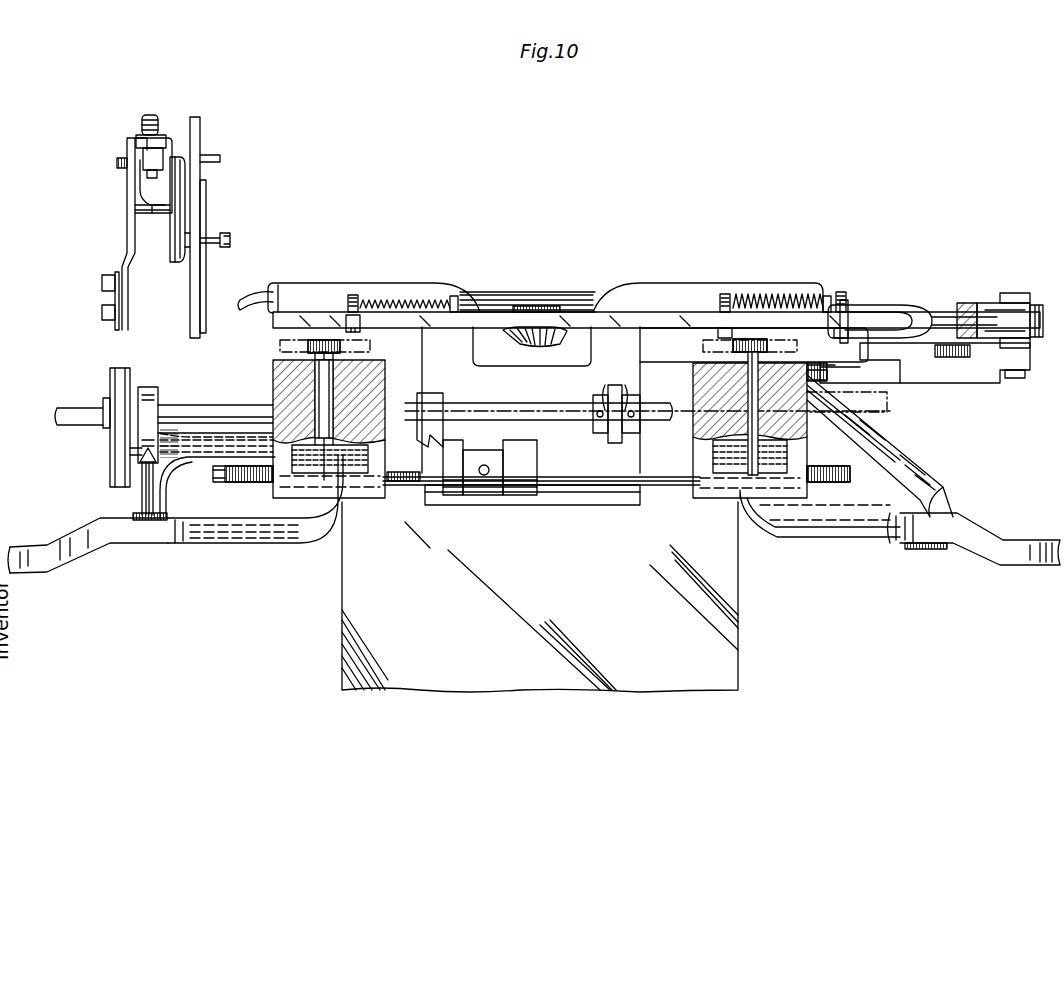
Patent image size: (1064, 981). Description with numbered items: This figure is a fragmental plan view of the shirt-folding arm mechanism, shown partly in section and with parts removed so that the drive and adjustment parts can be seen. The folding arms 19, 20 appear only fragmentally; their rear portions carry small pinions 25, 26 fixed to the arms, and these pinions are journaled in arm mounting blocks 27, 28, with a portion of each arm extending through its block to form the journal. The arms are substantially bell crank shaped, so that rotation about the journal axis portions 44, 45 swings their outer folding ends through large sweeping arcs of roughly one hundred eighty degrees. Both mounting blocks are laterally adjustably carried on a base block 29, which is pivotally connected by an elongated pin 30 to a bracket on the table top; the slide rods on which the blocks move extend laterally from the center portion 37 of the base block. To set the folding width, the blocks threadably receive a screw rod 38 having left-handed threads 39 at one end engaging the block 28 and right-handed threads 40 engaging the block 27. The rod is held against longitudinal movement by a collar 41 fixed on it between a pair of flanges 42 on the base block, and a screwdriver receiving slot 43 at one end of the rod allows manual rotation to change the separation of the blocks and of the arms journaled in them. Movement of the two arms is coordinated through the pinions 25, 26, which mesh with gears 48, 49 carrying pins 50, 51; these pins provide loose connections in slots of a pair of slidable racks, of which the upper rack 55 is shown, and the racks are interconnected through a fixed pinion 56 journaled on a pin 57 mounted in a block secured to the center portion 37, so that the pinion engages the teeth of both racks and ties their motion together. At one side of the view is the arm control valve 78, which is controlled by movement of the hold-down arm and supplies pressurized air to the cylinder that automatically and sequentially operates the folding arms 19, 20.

The folding arm 19 is at (72, 558).
The folding arm 20 is at (1003, 563).
The pinion 25 is at (300, 343).
The pinion 26 is at (753, 340).
The arm mounting block 27 is at (376, 370).
The arm mounting block 28 is at (695, 378).
The base block 29 is at (295, 295).
The elongated pin 30 is at (466, 294).
The center portion of base block 37 is at (572, 396).
The screw rod 38 is at (636, 495).
The left-handed threads 39 is at (825, 478).
The right-handed threads 40 is at (400, 488).
The collar 41 is at (490, 494).
The flanges 42 is at (450, 492).
The screwdriver receiving slot 43 is at (215, 478).
The journal axis portion 44 is at (318, 385).
The journal axis portion 45 is at (715, 364).
The gear 48 is at (342, 348).
The gear 49 is at (705, 348).
The pin 50 is at (720, 305).
The pin 51 is at (352, 302).
The upper rack 55 is at (603, 318).
The fixed pinion 56 is at (522, 305).
The pin 57 is at (545, 342).
The arm control valve 78 is at (167, 128).